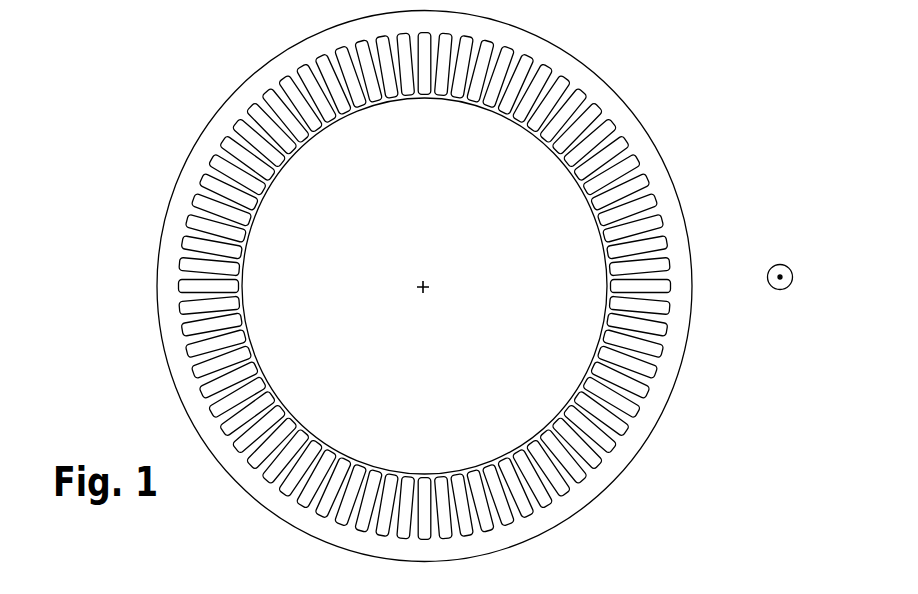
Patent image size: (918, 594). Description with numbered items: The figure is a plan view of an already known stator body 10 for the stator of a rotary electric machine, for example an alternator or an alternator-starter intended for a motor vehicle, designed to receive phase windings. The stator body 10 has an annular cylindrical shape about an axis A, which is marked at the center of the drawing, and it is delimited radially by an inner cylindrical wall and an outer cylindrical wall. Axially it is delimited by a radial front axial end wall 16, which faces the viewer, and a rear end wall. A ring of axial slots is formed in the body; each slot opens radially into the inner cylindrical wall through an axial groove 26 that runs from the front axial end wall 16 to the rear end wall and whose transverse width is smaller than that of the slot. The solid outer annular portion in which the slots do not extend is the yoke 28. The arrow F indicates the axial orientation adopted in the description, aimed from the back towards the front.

The stator body 10 is at (143, 182).
The radial front axial end wall 16 is at (675, 332).
The axial groove 26 is at (497, 110).
The yoke 28 is at (672, 230).
The axis A is at (419, 284).
The arrow indicating axial orientation F is at (796, 276).